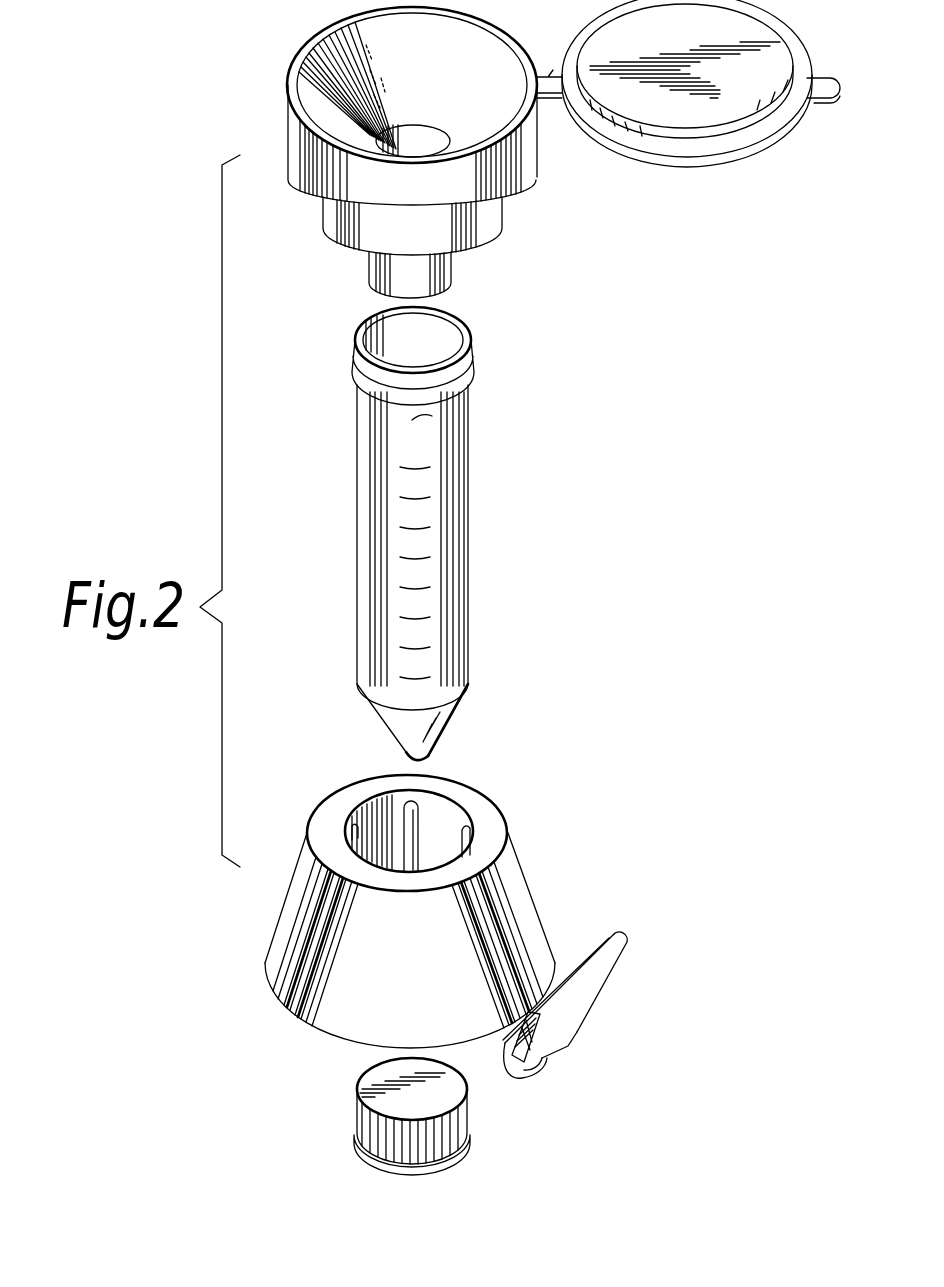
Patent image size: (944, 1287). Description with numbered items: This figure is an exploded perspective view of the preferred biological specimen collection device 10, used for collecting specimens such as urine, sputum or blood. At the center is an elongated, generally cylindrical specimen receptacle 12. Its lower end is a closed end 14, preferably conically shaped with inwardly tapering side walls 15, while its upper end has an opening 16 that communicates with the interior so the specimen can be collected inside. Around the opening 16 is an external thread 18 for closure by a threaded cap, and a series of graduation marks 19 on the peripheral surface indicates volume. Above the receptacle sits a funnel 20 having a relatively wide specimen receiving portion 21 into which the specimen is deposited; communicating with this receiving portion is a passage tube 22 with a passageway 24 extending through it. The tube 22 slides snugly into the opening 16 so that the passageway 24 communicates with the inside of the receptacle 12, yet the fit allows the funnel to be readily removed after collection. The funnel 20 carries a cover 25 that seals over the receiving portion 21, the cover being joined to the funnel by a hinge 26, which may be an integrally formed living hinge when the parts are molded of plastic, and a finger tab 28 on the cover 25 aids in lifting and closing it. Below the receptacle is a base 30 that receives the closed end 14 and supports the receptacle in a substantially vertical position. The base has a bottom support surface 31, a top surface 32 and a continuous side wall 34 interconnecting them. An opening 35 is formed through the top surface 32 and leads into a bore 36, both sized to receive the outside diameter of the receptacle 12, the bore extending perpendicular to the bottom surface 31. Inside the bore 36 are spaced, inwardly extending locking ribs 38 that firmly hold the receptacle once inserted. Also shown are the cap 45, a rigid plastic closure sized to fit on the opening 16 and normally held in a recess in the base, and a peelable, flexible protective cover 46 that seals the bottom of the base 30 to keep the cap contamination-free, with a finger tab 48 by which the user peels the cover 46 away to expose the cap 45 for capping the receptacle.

The biological specimen collection device 10 is at (565, 523).
The specimen receptacle 12 is at (435, 532).
The closed end 14 is at (418, 760).
The inwardly tapering side walls 15 is at (445, 726).
The opening 16 is at (437, 340).
The external thread 18 is at (467, 370).
The graduation marks 19 is at (418, 498).
The funnel 20 is at (396, 152).
The specimen receiving portion 21 is at (308, 78).
The passage tube 22 is at (378, 270).
The passageway 24 is at (427, 142).
The cover 25 is at (747, 40).
The hinge 26 is at (545, 80).
The finger tab 28 is at (824, 86).
The base 30 is at (406, 897).
The bottom support surface 31 is at (280, 1005).
The top surface 32 is at (492, 842).
The side walls 34 is at (290, 920).
The opening 35 is at (460, 810).
The bore 36 is at (350, 818).
The locking ribs 38 is at (353, 838).
The cap 45 is at (368, 1083).
The protective cover 46 is at (517, 1067).
The finger tab 48 is at (622, 940).